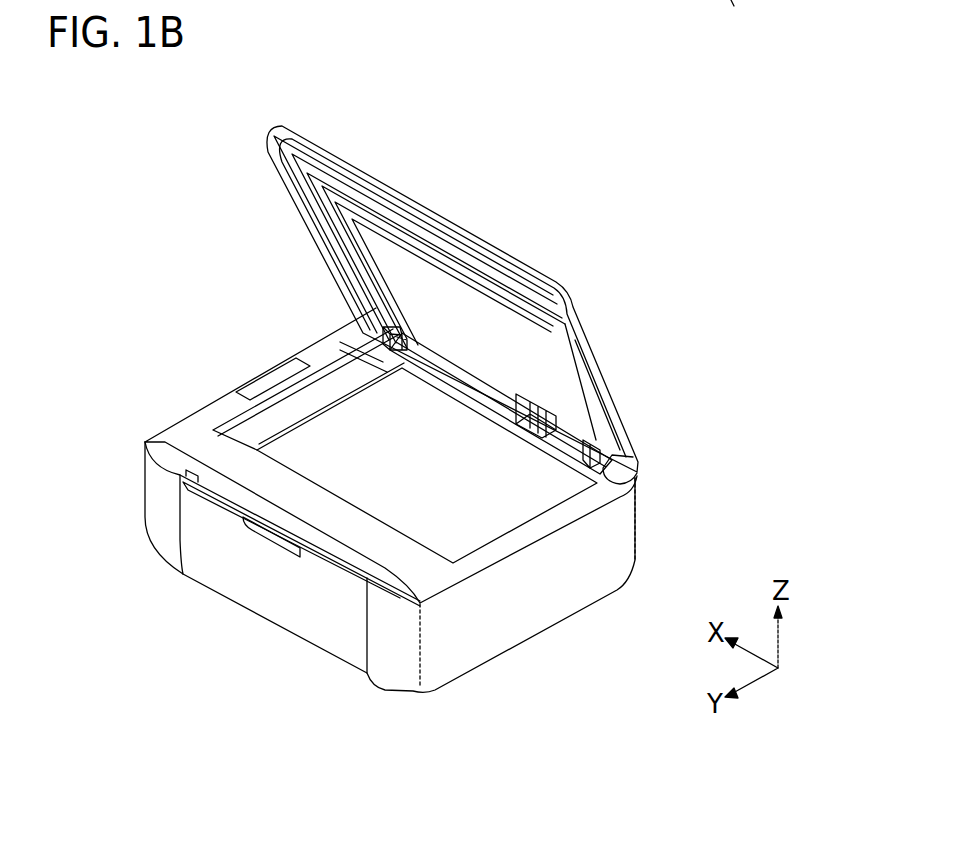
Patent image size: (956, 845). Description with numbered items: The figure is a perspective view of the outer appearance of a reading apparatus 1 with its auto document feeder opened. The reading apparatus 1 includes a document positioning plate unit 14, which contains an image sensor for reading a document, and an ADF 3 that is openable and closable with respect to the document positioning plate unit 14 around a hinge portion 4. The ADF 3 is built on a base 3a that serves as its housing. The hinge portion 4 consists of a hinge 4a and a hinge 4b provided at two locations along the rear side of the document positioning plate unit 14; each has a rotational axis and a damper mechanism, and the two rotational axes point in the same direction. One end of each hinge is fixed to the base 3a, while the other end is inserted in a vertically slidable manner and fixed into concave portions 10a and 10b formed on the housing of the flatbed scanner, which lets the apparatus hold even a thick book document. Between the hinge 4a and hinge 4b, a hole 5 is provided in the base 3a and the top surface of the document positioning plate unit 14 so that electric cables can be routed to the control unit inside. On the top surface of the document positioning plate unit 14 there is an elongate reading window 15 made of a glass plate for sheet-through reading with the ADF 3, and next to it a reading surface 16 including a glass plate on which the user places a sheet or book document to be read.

The reading apparatus 1 is at (691, 452).
The auto document feeder (ADF) 3 is at (442, 288).
The base 3a is at (567, 363).
The hinge portion 4 is at (501, 407).
The hinge 4a is at (578, 462).
The hinge 4b is at (400, 326).
The hole 5 is at (527, 410).
The concave portion 10a is at (638, 478).
The concave portion 10b is at (372, 326).
The document positioning plate unit 14 is at (207, 417).
The reading window 15 is at (298, 395).
The reading surface 16 is at (468, 533).